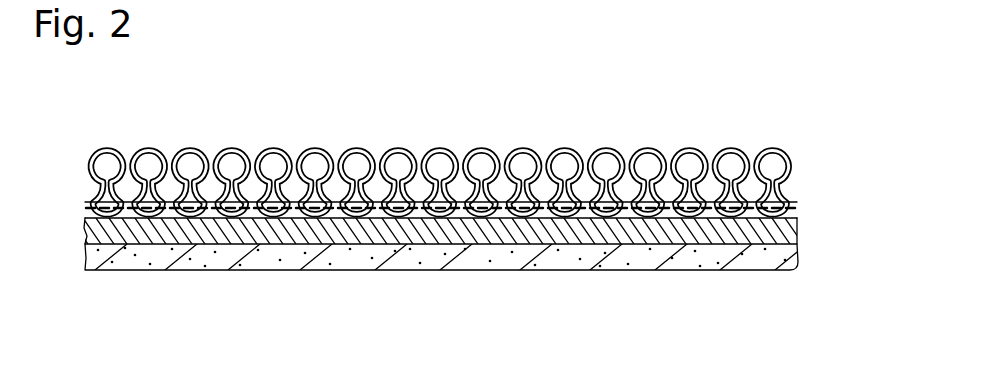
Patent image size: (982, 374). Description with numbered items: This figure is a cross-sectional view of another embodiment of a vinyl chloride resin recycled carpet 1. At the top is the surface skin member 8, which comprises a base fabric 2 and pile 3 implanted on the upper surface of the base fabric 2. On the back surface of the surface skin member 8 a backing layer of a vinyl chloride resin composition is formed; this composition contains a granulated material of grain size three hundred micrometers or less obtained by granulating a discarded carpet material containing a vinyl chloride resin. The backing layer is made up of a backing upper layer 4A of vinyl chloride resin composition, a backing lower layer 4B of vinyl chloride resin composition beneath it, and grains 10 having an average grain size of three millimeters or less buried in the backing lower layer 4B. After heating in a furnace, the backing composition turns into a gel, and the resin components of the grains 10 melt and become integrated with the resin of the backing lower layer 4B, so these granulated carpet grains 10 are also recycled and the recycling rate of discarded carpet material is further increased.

The vinyl chloride resin recycled carpet 1 is at (594, 110).
The base fabric 2 is at (795, 207).
The pile 3 is at (785, 162).
The surface skin member 8 is at (863, 111).
The backing upper layer 4A is at (778, 233).
The backing lower layer 4B is at (786, 272).
The grains 10 is at (177, 250).